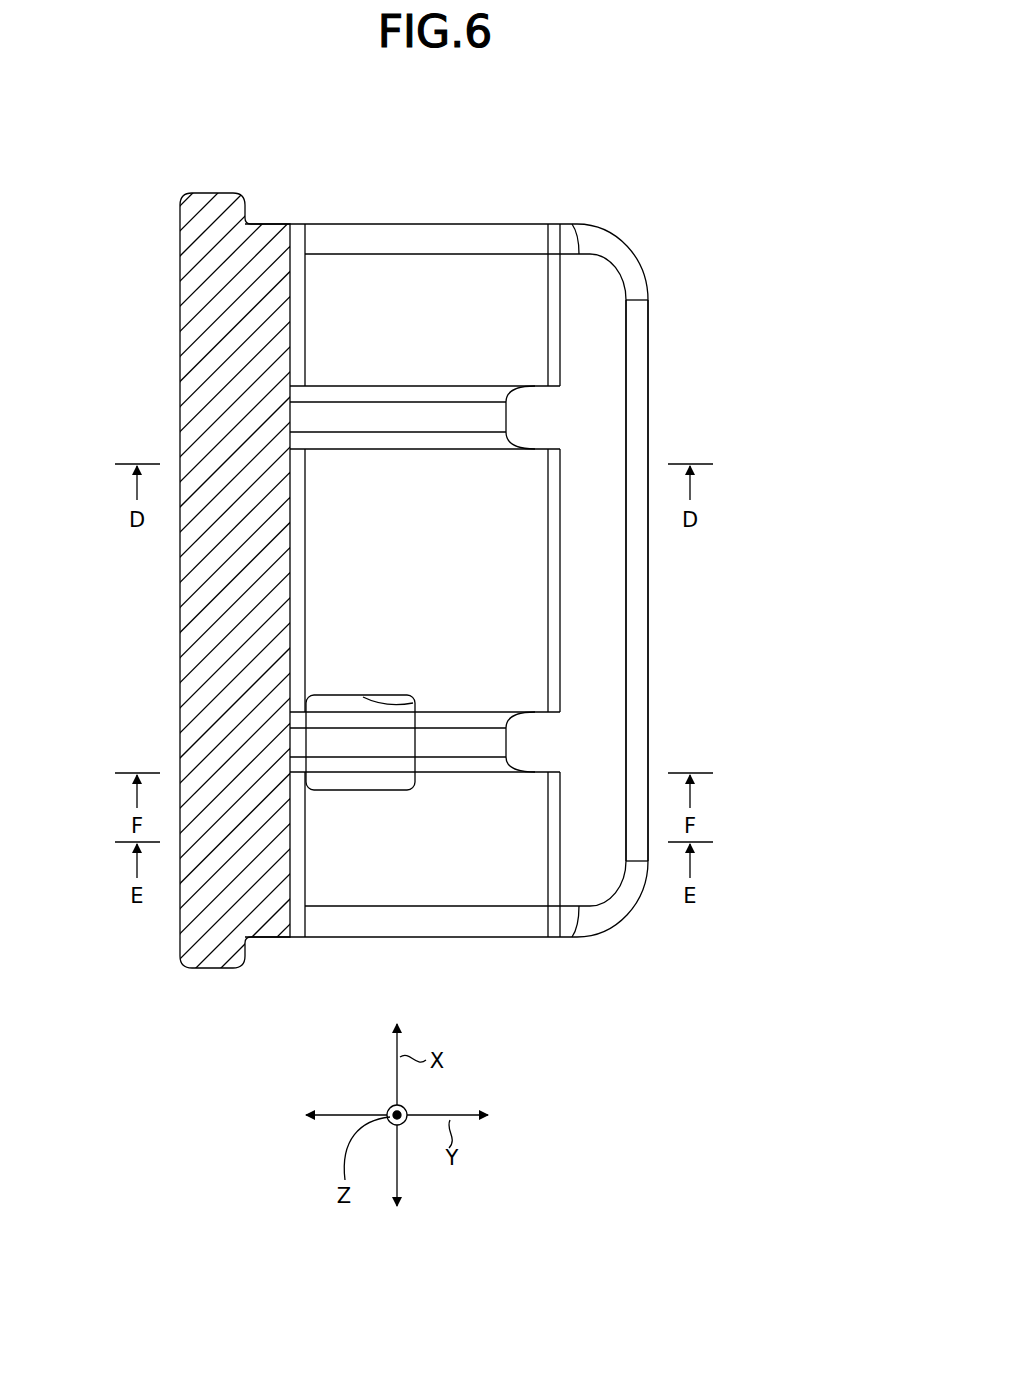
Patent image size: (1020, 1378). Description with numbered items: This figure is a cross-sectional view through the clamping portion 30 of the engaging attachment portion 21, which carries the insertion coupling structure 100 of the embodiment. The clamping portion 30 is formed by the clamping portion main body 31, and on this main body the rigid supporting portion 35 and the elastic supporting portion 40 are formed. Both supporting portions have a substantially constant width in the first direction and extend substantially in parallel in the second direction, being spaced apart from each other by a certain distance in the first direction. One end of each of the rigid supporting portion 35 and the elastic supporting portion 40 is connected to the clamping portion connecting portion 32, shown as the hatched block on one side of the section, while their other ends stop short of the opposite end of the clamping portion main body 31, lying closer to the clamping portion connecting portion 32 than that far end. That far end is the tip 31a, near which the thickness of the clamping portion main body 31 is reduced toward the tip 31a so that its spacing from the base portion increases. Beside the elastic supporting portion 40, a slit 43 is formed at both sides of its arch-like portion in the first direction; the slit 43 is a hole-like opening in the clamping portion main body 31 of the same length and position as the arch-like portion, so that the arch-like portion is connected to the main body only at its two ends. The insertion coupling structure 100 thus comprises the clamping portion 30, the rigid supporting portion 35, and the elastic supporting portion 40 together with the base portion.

The clamping portion 30 is at (520, 160).
The clamping portion main body 31 is at (336, 224).
The tip 31a is at (650, 318).
The clamping portion connecting portion 32 is at (180, 322).
The rigid supporting portion 35 is at (399, 415).
The elastic supporting portion 40 is at (447, 742).
The slit 43 is at (415, 703).
The engaging attachment portion 21 is at (504, 607).
The insertion coupling structure 100 is at (654, 937).